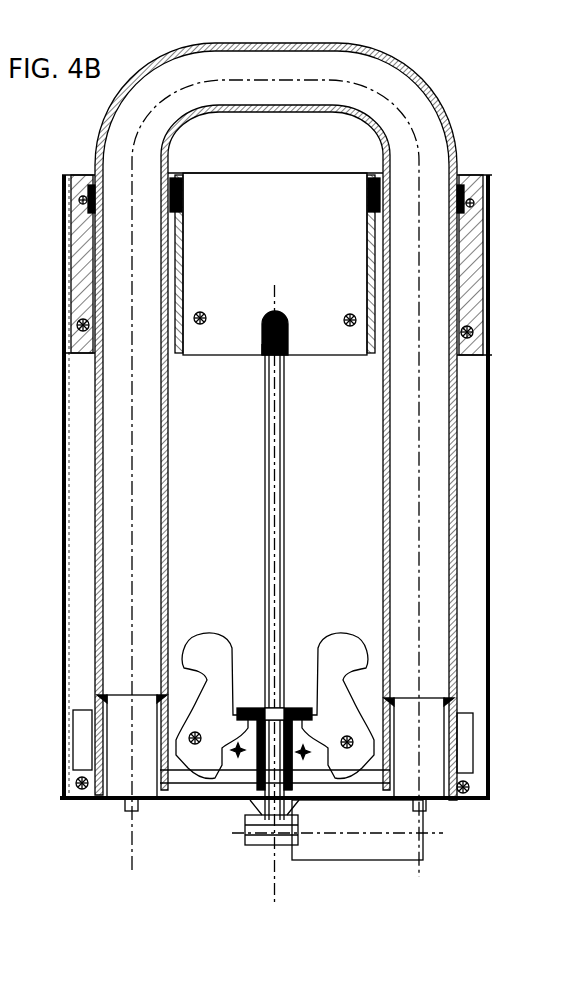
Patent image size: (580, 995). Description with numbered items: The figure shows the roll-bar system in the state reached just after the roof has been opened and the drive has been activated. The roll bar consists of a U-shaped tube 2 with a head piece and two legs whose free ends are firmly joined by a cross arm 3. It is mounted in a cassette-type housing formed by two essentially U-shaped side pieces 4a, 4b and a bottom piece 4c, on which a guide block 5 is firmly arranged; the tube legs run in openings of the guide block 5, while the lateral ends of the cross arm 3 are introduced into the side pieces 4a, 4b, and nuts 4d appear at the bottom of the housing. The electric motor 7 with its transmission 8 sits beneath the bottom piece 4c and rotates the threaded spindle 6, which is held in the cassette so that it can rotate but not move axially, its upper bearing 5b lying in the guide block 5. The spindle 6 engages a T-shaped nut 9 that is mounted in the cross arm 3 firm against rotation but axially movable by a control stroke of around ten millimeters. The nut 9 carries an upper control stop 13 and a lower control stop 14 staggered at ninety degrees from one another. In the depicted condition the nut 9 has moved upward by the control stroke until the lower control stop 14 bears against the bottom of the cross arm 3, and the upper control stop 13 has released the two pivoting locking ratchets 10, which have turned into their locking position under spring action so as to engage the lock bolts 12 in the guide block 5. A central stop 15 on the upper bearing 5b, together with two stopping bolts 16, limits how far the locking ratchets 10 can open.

The U-shaped tube 2 is at (388, 124).
The cross arm 3 is at (248, 760).
The side piece 4a is at (63, 357).
The side piece 4b is at (490, 383).
The bottom piece 4c is at (176, 800).
The nut 4d is at (120, 801).
The guide block 5 is at (287, 202).
The upper bearing 5b is at (278, 315).
The threaded spindle 6 is at (284, 442).
The electric motor 7 is at (385, 848).
The transmission 8 is at (244, 843).
The T-shaped nut 9 is at (252, 742).
The locking ratchet 10 is at (210, 650).
The lock bolt 12 is at (203, 330).
The upper control stop 13 is at (292, 705).
The lower control stop 14 is at (286, 777).
The central stop 15 is at (262, 350).
The stopping bolt 16 is at (306, 756).